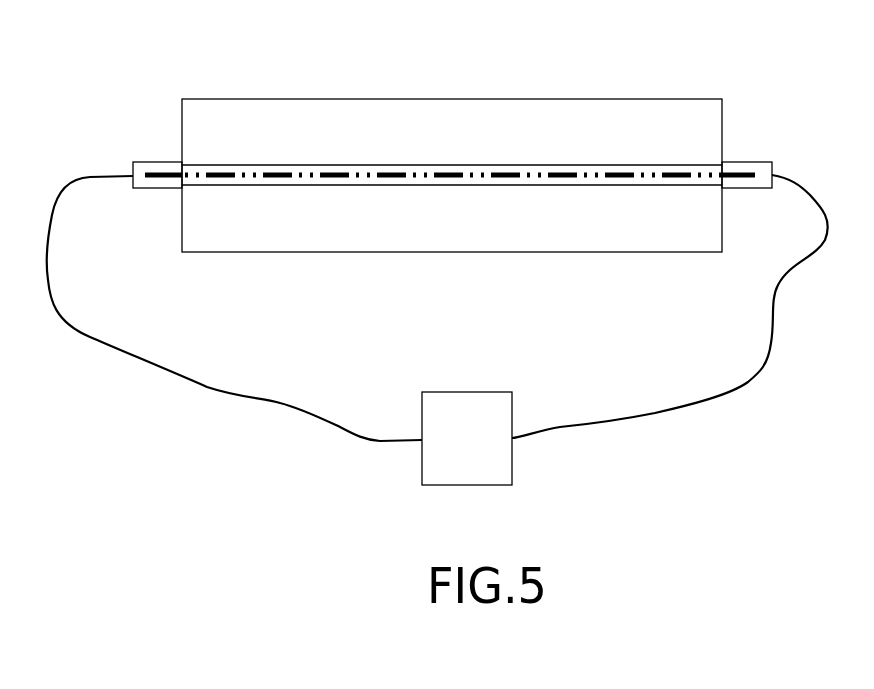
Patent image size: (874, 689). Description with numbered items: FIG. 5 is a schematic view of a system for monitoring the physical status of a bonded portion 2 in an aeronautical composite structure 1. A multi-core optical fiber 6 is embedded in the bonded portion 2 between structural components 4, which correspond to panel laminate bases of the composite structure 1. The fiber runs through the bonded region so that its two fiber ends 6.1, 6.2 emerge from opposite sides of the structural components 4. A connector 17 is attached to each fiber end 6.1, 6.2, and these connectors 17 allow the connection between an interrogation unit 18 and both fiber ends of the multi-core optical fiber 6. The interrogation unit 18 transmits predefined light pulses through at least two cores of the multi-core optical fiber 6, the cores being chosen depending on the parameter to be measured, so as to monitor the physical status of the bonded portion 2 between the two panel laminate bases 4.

The aeronautical composite structure 1 is at (327, 35).
The bonded portion 2 is at (470, 130).
The structural component 4 is at (623, 110).
The multi-core optical fiber 6 is at (336, 165).
The fiber end 6.1 is at (157, 162).
The fiber end 6.2 is at (740, 162).
The connector 17 is at (163, 188).
The interrogation unit 18 is at (467, 402).